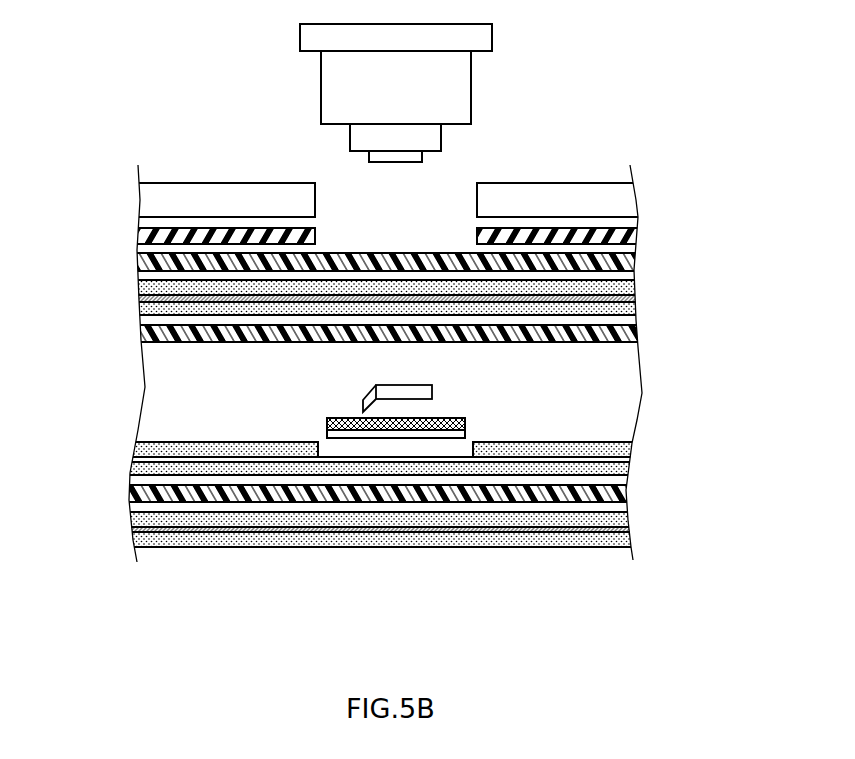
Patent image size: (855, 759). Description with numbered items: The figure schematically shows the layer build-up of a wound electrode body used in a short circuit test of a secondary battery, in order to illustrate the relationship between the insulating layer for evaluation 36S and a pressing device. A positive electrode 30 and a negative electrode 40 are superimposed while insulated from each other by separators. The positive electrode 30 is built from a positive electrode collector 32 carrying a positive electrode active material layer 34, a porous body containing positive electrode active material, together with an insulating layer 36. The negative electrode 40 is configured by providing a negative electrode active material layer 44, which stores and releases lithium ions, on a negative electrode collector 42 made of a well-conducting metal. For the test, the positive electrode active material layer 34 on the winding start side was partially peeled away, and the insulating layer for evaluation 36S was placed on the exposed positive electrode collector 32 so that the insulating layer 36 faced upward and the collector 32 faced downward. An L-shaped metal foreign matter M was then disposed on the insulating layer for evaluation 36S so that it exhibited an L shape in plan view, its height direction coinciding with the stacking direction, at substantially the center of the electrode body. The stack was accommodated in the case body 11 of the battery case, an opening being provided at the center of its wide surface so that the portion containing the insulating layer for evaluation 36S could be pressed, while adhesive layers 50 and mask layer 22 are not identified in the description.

The case body 11 is at (627, 203).
The mask layer 22 is at (633, 238).
The adhesive layer 50 is at (137, 263).
The negative electrode 40 is at (445, 423).
The negative electrode active material layer 44 is at (627, 288).
The negative electrode collector 42 is at (627, 300).
The positive electrode 30 is at (445, 440).
The positive electrode active material layer 34 is at (632, 447).
The positive electrode collector 32 is at (327, 432).
The insulating layer for evaluation 36S is at (422, 417).
The insulating layer 36 is at (327, 421).
The metal foreign matter M is at (432, 392).